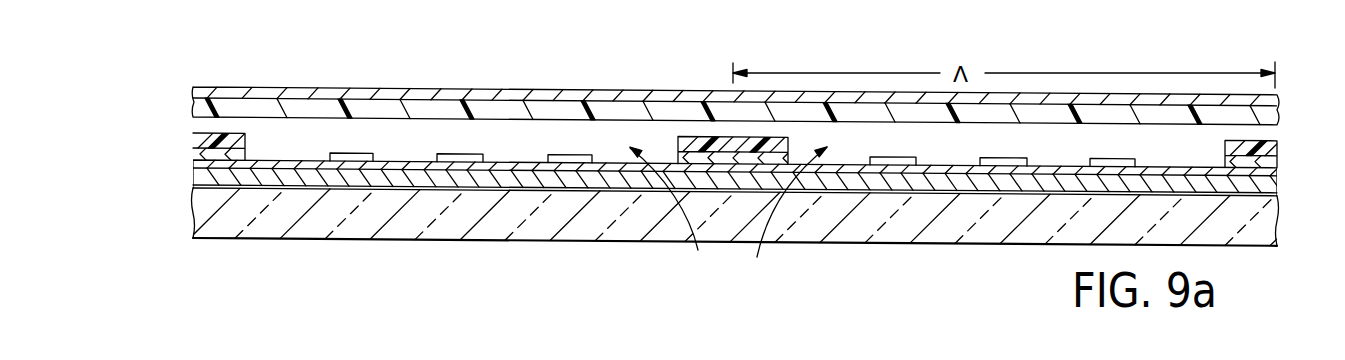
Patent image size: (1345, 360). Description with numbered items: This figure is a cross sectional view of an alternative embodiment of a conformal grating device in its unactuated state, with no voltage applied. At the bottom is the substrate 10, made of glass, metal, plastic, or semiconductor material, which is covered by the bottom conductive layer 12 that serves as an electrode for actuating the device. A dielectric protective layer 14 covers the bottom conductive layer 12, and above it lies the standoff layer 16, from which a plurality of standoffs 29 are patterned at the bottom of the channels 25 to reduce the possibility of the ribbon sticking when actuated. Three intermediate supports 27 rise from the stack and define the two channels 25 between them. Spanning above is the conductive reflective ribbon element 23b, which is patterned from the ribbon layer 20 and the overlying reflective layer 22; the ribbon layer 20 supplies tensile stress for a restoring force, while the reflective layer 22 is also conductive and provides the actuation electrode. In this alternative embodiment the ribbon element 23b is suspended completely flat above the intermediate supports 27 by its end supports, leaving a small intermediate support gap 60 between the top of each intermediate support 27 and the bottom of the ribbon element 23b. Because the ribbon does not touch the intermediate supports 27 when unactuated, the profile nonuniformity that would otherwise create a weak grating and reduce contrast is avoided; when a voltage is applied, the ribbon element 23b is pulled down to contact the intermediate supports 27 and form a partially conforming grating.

The substrate 10 is at (218, 223).
The bottom conductive layer 12 is at (193, 186).
The dielectric protective layer 14 is at (193, 173).
The standoff layer 16 is at (193, 160).
The ribbon layer 20 is at (193, 112).
The reflective layer 22 is at (193, 93).
The conductive reflective ribbon element 23b is at (700, 71).
The channels 25 is at (728, 216).
The intermediate supports 27 is at (243, 142).
The standoffs 29 is at (338, 151).
The intermediate support gap 60 is at (230, 124).